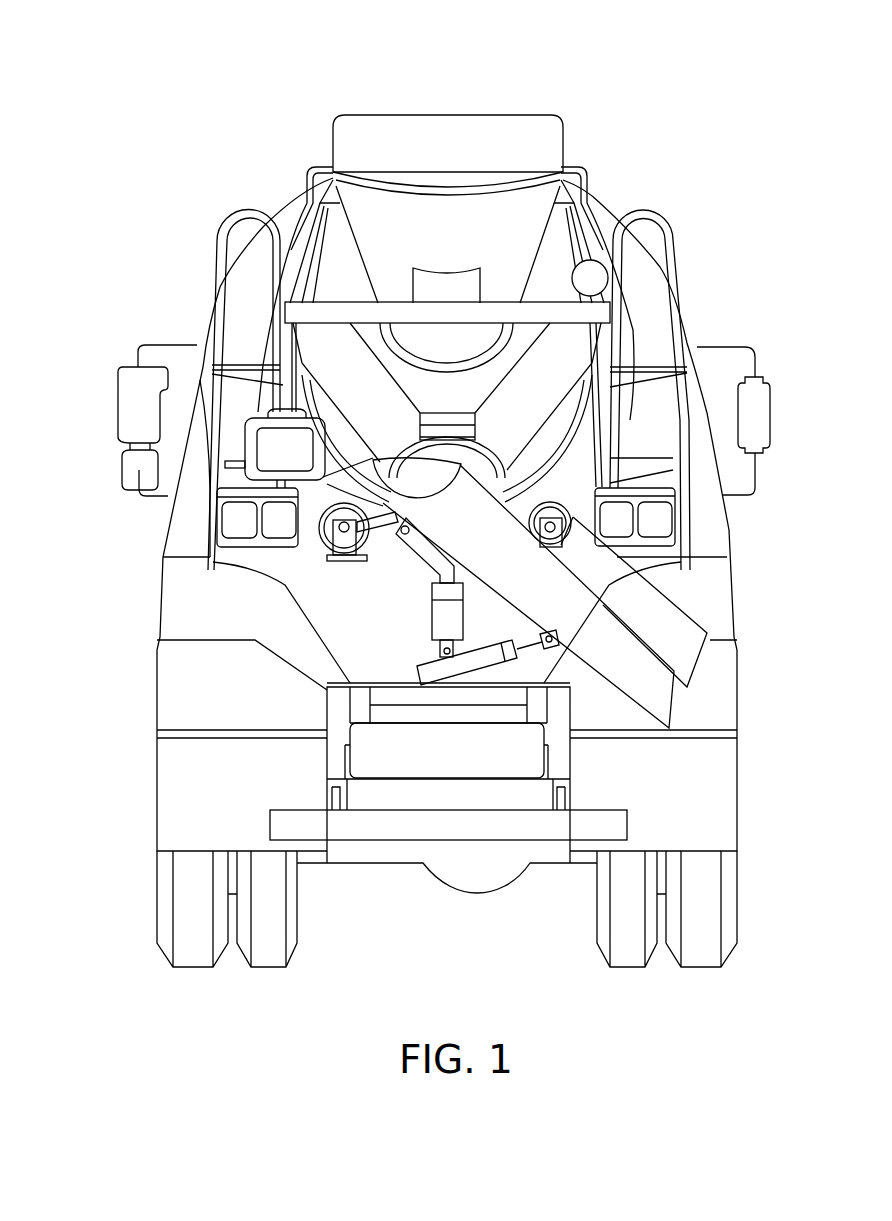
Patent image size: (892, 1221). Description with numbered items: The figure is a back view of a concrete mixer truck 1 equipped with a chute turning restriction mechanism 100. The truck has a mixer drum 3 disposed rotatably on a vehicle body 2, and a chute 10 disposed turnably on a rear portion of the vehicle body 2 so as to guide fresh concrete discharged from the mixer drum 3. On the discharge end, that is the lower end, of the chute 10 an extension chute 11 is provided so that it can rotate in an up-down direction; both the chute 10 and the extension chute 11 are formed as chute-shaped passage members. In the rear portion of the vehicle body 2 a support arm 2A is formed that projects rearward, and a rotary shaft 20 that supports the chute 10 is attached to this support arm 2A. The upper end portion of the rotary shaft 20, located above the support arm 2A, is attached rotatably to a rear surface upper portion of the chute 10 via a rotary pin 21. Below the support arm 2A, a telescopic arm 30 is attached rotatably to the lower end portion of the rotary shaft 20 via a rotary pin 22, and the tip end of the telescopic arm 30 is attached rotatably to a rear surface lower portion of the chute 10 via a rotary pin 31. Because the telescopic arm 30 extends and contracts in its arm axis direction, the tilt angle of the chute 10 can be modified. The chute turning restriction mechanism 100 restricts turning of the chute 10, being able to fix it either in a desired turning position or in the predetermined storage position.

The concrete mixer truck 1 is at (441, 499).
The vehicle body 2 is at (182, 705).
The support arm 2A is at (425, 607).
The mixer drum 3 is at (242, 298).
The chute 10 is at (632, 648).
The extension chute 11 is at (667, 611).
The rotary shaft 20 is at (419, 598).
The rotary pin 21 is at (403, 528).
The rotary pin 22 is at (443, 658).
The telescopic arm 30 is at (477, 663).
The rotary pin 31 is at (548, 649).
The chute turning restriction mechanism 100 is at (448, 622).